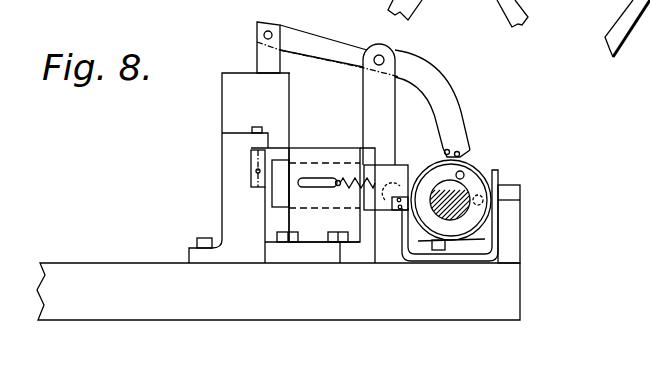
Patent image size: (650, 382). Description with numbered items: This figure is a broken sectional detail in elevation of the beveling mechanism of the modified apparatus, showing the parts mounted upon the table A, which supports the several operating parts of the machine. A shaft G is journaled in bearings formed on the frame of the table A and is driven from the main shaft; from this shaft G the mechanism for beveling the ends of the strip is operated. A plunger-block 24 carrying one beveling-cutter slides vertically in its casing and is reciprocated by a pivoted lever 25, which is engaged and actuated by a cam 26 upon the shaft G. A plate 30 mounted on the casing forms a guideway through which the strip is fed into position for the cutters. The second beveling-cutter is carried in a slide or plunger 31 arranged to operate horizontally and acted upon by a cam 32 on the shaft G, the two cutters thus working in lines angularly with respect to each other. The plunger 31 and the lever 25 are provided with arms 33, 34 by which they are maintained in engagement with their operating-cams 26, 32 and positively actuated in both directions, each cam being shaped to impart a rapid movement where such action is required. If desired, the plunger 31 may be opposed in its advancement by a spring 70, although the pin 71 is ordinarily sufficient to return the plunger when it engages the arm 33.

The table A is at (312, 313).
The plunger-block 24 is at (262, 57).
The lever 25 is at (312, 40).
The cam 26 is at (428, 170).
The plate 30 is at (251, 167).
The plunger 31 is at (393, 173).
The cam 32 is at (448, 225).
The arm 33 is at (462, 247).
The arm 34 is at (480, 242).
The spring 70 is at (350, 178).
The pin 71 is at (464, 174).
The shaft G is at (462, 185).